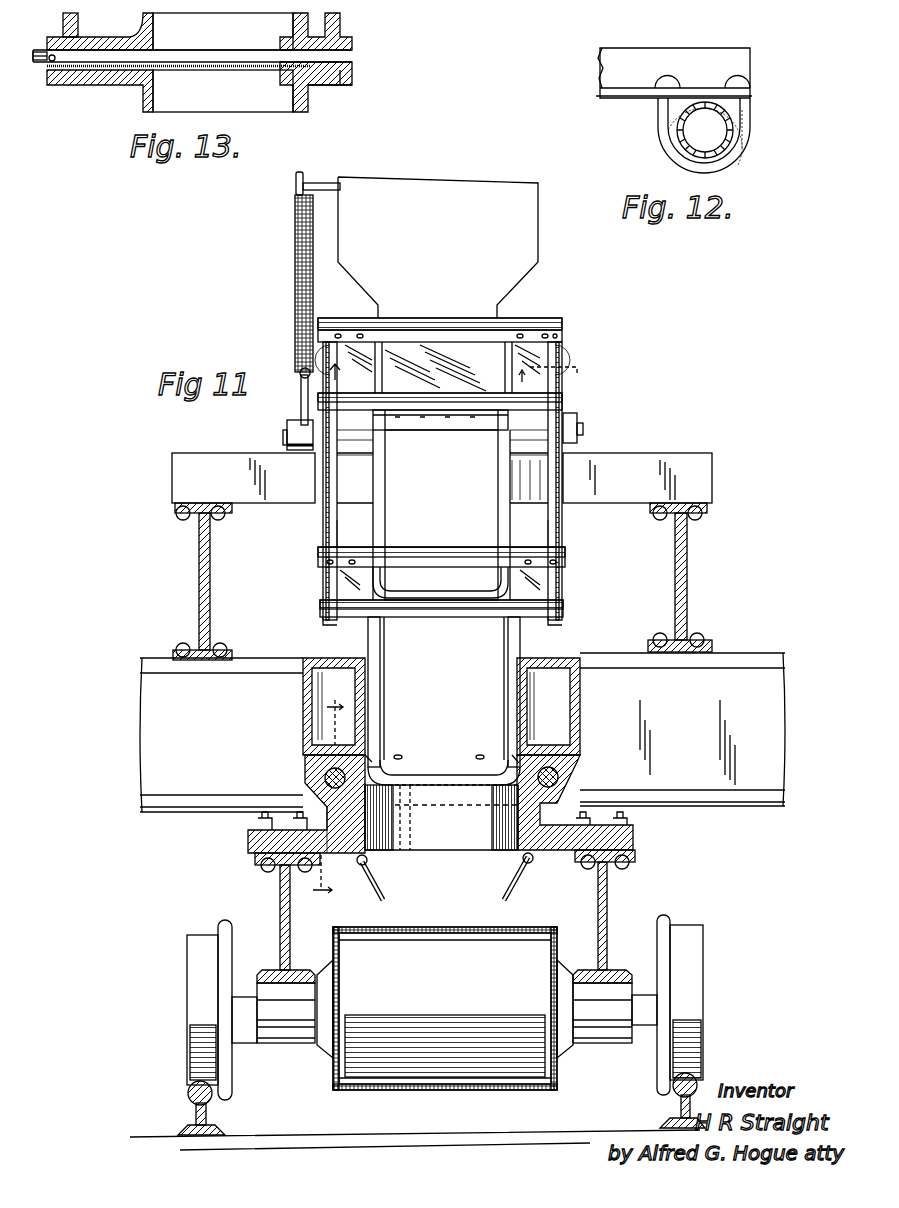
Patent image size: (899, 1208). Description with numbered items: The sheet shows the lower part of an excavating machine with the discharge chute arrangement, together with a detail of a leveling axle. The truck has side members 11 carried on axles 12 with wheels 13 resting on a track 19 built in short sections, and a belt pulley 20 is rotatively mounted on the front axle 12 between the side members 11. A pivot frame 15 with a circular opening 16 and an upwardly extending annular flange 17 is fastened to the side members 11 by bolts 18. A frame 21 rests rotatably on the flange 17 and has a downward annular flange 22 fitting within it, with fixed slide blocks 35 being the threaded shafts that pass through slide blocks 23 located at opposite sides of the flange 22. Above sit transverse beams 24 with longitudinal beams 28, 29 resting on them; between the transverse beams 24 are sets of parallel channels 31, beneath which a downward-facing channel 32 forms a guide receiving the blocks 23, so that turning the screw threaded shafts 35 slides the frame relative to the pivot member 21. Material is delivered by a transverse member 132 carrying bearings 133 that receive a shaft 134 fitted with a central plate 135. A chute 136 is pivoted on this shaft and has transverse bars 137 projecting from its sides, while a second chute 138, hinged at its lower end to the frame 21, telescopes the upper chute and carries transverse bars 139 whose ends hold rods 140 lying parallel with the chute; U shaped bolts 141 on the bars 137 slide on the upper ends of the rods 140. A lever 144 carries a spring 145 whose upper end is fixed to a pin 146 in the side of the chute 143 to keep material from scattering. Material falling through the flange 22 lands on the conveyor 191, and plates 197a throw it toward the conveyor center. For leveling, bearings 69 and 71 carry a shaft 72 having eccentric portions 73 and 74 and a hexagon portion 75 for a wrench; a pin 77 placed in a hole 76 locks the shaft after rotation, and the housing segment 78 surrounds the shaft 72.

In FIG. 11, the side members 11 is at (282, 910).
In FIG. 11, the axles 12 is at (258, 1055).
In FIG. 11, the wheels 13 is at (195, 1030).
In FIG. 11, the pivot frame 15 is at (255, 845).
In FIG. 11, the circular opening 16 is at (415, 836).
In FIG. 11, the annular flange 17 is at (325, 807).
In FIG. 11, the bolts 18 is at (232, 822).
In FIG. 11, the track 19 is at (210, 1115).
In FIG. 11, the belt pulley 20 is at (445, 1008).
In FIG. 11, the frame 21 is at (441, 817).
In FIG. 11, the annular flange 22 is at (517, 832).
In FIG. 11, the slide blocks 23 is at (682, 729).
In FIG. 11, the transverse beams 24 is at (221, 735).
In FIG. 11, the longitudinal beam 28 is at (210, 590).
In FIG. 11, the longitudinal beam 29 is at (677, 570).
In FIG. 11, the parallel channels 31 is at (355, 716).
In FIG. 11, the channel 32 is at (372, 768).
In FIG. 11, the screw threaded shafts 35 is at (310, 757).
In FIG. 13, the bearings 69 is at (58, 85).
In FIG. 13, the bearings 71 is at (334, 80).
In FIG. 13, the shaft 72 is at (185, 60).
In FIG. 13, the eccentric portion 73 is at (350, 50).
In FIG. 13, the eccentric portion 74 is at (72, 60).
In FIG. 13, the hexagon portion 75 is at (38, 50).
In FIG. 13, the hole 76 is at (48, 72).
In FIG. 13, the pin 77 is at (70, 78).
In FIG. 13, the housing 78 is at (170, 91).
In FIG. 11, the transverse member 132 is at (442, 486).
In FIG. 11, the bearings 133 is at (578, 428).
In FIG. 11, the shaft 134 is at (583, 430).
In FIG. 11, the plate 135 is at (462, 415).
In FIG. 11, the chute 136 is at (441, 515).
In FIG. 12, the transverse bars 137 is at (674, 73).
In FIG. 11, the transverse bars 137 is at (437, 322).
In FIG. 11, the second chute 138 is at (444, 701).
In FIG. 11, the transverse bars 139 is at (440, 548).
In FIG. 12, the rod 140 is at (677, 128).
In FIG. 11, the rod 140 is at (323, 537).
In FIG. 12, the U shaped bolts 141 is at (745, 158).
In FIG. 11, the U shaped bolts 141 is at (565, 358).
In FIG. 11, the chute 143 is at (438, 247).
In FIG. 11, the lever 144 is at (300, 407).
In FIG. 11, the spring 145 is at (297, 280).
In FIG. 11, the pin 146 is at (318, 180).
In FIG. 11, the conveyor 191 is at (430, 935).
In FIG. 11, the plates 197a is at (525, 888).